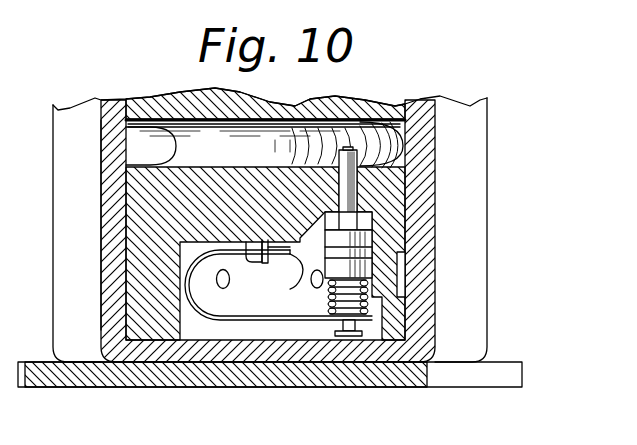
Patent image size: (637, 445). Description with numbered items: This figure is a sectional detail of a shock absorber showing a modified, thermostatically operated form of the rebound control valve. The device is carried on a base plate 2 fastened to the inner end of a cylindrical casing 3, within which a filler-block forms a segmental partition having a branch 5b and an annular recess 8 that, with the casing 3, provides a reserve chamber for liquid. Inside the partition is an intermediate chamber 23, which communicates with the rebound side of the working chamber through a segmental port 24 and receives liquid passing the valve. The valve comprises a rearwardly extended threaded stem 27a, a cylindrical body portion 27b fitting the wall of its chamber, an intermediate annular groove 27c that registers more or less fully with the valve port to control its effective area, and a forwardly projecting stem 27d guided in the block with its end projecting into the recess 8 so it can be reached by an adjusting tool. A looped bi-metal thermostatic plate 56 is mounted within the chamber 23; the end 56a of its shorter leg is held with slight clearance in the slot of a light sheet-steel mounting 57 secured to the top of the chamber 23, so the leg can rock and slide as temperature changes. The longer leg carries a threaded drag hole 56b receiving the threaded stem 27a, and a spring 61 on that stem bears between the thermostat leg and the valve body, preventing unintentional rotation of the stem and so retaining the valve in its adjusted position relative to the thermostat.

The base plate 2 is at (166, 386).
The cylindrical casing 3 is at (427, 129).
The branch of the segmental partition 5b is at (132, 298).
The annular recess 8 is at (132, 140).
The chamber 23 is at (249, 330).
The segmental port 24 is at (404, 281).
The threaded stem 27a is at (362, 325).
The cylindrical body portion 27b is at (372, 265).
The intermediate annular groove 27c is at (355, 158).
The forwardly projecting stem 27d is at (357, 186).
The looped bi-metal thermostatic plate 56 is at (193, 295).
The end of the shorter leg 56a is at (303, 268).
The drag hole 56b is at (348, 336).
The mounting 57 is at (258, 265).
The spring 61 is at (368, 309).